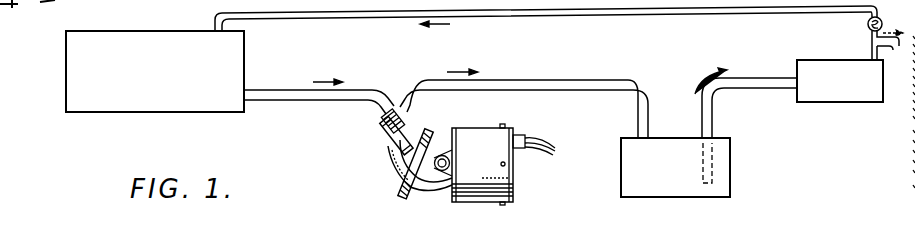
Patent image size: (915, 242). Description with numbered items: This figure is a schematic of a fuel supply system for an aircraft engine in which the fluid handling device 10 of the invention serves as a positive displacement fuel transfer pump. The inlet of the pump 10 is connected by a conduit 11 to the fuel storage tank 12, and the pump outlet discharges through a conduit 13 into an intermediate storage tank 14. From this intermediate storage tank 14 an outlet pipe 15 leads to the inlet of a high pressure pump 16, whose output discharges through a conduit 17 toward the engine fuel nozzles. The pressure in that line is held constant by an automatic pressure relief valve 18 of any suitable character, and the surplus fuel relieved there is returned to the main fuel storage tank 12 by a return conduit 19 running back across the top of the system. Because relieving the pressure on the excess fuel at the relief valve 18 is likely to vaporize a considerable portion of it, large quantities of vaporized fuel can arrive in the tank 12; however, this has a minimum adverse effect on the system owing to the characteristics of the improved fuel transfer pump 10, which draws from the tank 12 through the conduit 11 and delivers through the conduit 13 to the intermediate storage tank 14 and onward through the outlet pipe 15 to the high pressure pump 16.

The fluid handling device 10 is at (397, 177).
The conduit 11 is at (287, 97).
The fuel storage tank 12 is at (172, 106).
The conduit 13 is at (496, 86).
The intermediate storage tank 14 is at (691, 191).
The outlet pipe 15 is at (758, 82).
The high pressure pump 16 is at (863, 98).
The conduit 17 is at (893, 50).
The automatic pressure relief valve 18 is at (868, 25).
The conduit 19 is at (680, 12).